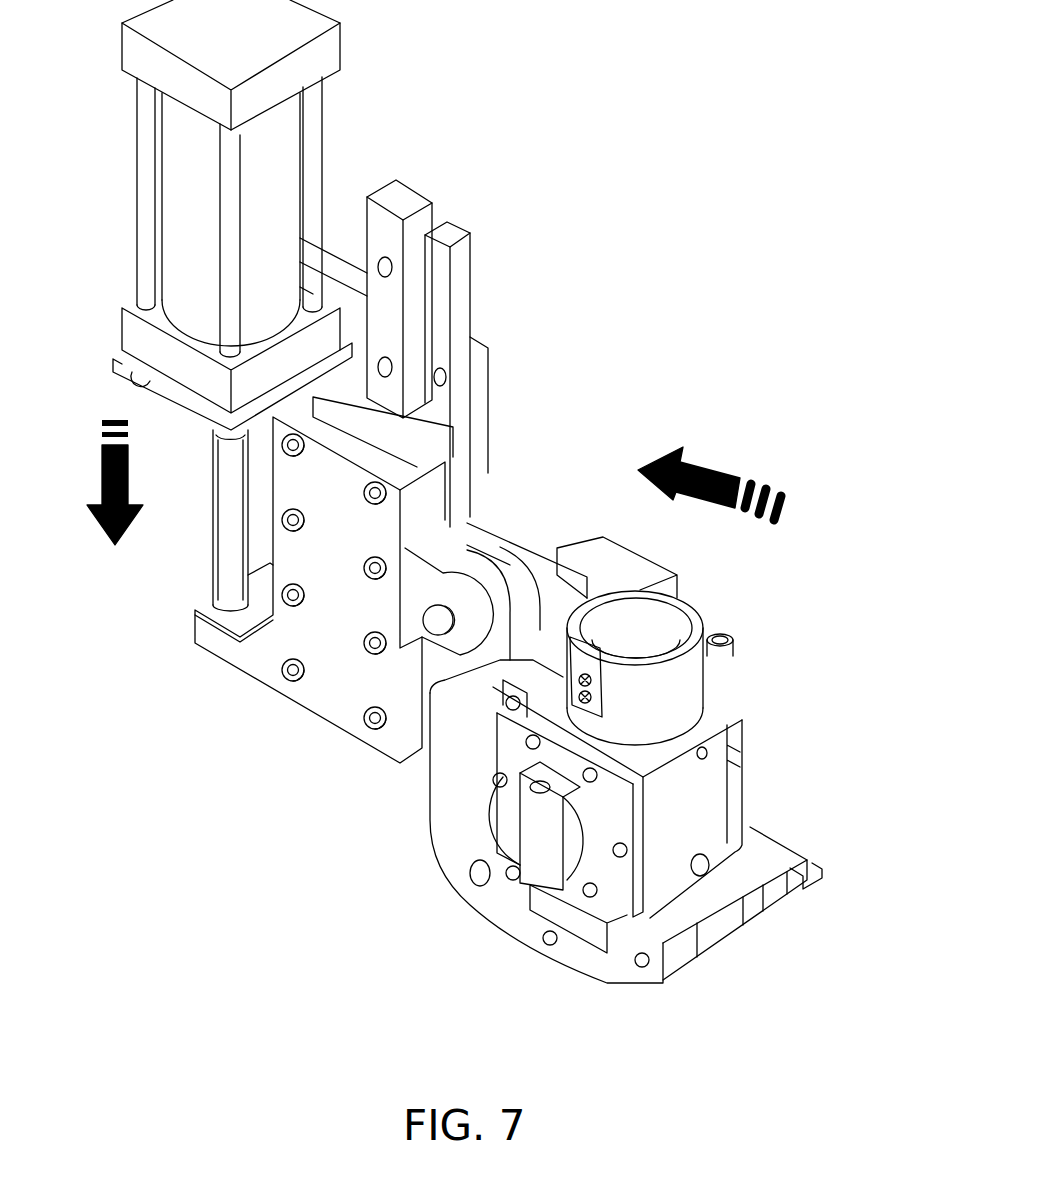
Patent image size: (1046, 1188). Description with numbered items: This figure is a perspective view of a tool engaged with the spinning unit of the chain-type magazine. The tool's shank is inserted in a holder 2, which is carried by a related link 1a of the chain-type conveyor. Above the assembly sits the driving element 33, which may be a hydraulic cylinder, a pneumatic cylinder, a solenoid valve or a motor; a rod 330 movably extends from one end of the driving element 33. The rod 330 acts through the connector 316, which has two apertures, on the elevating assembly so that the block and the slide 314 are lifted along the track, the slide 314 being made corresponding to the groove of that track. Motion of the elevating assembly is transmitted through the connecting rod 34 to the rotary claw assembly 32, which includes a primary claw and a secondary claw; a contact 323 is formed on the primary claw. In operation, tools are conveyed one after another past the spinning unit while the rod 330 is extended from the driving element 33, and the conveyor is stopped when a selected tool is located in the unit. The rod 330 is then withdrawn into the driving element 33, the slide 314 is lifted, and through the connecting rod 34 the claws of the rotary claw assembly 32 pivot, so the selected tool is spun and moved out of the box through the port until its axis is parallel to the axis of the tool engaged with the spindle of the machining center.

The driving element 33 is at (172, 157).
The rod 330 is at (230, 585).
The slide 314 is at (385, 215).
The connector 316 is at (318, 695).
The connecting rod 34 is at (517, 563).
The holder 2 is at (683, 695).
The link 1a is at (750, 760).
The contact 323 is at (617, 920).
The rotary claw assembly 32 is at (722, 967).